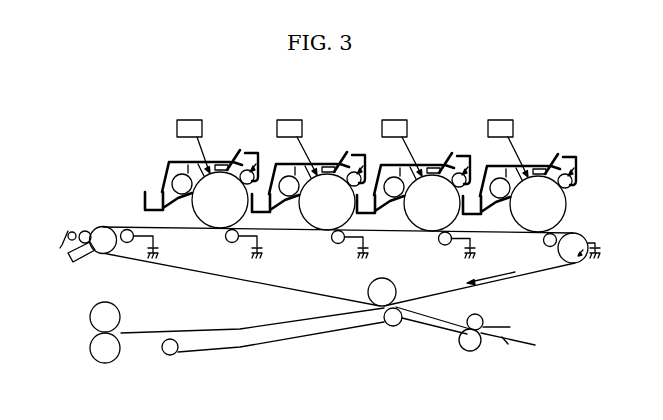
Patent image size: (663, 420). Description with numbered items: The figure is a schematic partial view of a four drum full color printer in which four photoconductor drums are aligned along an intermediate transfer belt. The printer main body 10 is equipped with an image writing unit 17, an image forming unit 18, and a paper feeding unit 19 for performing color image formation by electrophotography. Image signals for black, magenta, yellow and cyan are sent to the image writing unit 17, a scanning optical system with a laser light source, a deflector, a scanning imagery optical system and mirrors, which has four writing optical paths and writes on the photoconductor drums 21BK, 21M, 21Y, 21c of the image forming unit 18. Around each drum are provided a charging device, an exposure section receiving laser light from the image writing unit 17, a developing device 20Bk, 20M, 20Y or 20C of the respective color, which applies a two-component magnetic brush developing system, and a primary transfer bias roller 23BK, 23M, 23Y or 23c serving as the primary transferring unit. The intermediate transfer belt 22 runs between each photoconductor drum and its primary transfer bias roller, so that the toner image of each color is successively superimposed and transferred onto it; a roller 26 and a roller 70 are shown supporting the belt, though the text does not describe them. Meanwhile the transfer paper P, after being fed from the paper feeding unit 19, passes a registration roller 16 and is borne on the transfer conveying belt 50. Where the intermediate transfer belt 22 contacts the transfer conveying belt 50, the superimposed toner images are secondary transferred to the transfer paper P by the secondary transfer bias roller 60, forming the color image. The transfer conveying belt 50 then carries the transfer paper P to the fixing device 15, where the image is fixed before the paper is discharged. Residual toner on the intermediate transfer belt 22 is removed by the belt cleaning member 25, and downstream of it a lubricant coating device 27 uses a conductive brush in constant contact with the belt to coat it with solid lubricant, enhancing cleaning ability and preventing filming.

The printer main body 10 is at (118, 151).
The fixing device 15 is at (124, 352).
The registration roller 16 is at (461, 351).
The image writing unit 17 is at (192, 120).
The image forming unit 18 is at (252, 144).
The paper feeding unit 19 is at (519, 349).
The developing device 20C is at (168, 161).
The developing device 20Y is at (300, 179).
The developing device 20M is at (405, 180).
The developing device 20Bk is at (511, 181).
The photoconductor drum 21c is at (232, 208).
The photoconductor drum 21Y is at (339, 210).
The photoconductor drum 21M is at (445, 211).
The photoconductor drum 21BK is at (554, 212).
The intermediate transfer belt 22 is at (541, 272).
The primary transfer bias roller 23c is at (228, 242).
The primary transfer bias roller 23Y is at (334, 243).
The primary transfer bias roller 23M is at (441, 245).
The primary transfer bias roller 23BK is at (545, 246).
The belt cleaning member 25 is at (70, 262).
The belt drive roller 26 is at (103, 233).
The lubricant coating device 27 is at (78, 226).
The transfer conveying belt 50 is at (288, 340).
The secondary transfer bias roller 60 is at (390, 327).
The belt support roller 70 is at (127, 242).
The transfer paper P is at (538, 343).